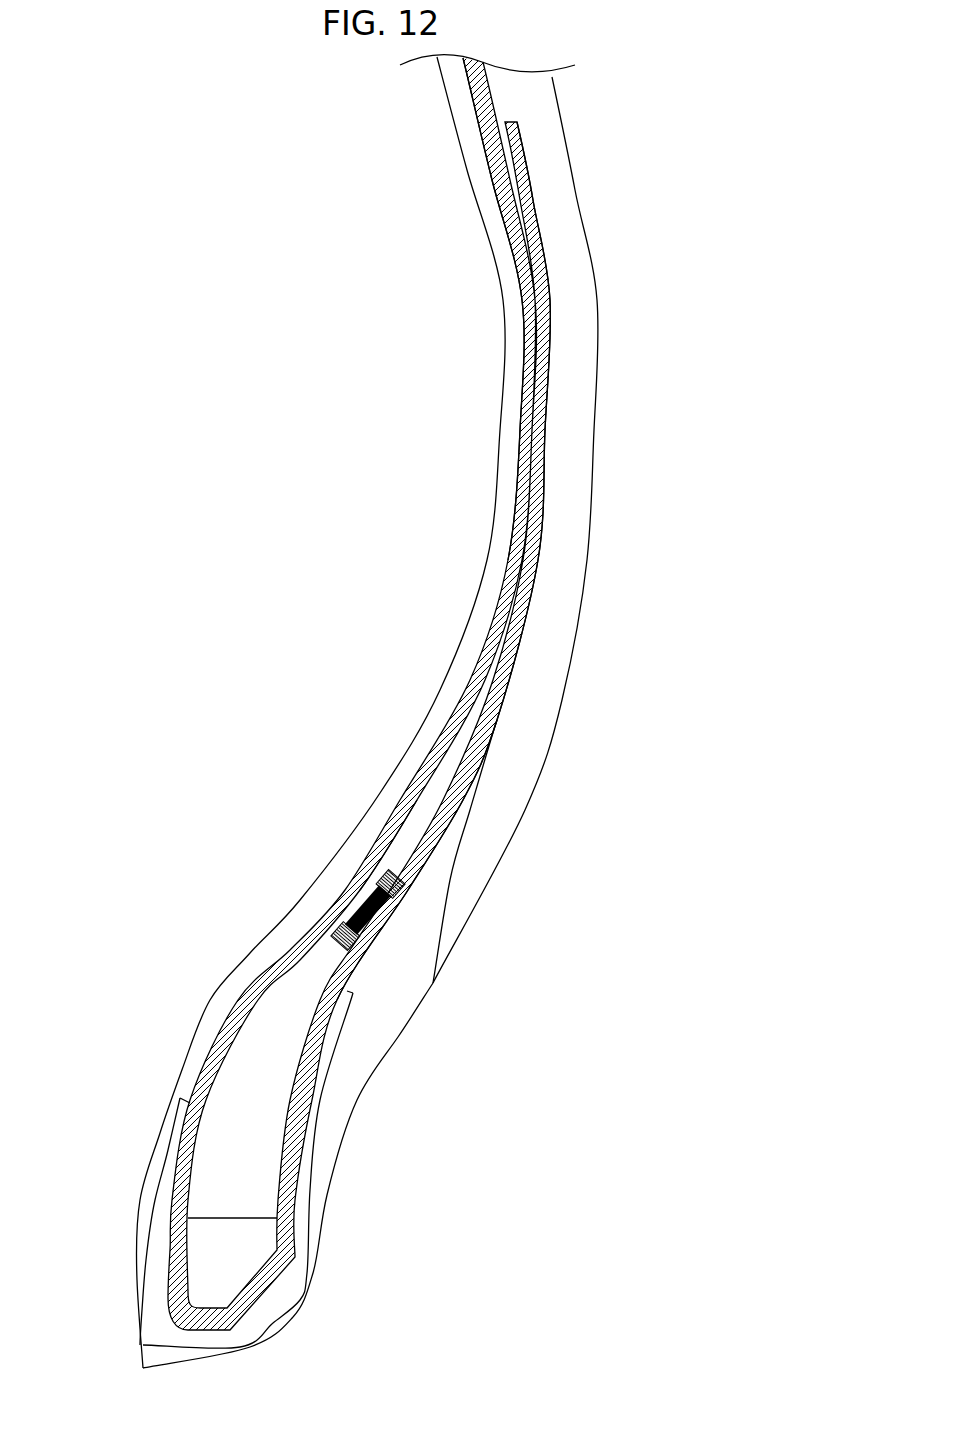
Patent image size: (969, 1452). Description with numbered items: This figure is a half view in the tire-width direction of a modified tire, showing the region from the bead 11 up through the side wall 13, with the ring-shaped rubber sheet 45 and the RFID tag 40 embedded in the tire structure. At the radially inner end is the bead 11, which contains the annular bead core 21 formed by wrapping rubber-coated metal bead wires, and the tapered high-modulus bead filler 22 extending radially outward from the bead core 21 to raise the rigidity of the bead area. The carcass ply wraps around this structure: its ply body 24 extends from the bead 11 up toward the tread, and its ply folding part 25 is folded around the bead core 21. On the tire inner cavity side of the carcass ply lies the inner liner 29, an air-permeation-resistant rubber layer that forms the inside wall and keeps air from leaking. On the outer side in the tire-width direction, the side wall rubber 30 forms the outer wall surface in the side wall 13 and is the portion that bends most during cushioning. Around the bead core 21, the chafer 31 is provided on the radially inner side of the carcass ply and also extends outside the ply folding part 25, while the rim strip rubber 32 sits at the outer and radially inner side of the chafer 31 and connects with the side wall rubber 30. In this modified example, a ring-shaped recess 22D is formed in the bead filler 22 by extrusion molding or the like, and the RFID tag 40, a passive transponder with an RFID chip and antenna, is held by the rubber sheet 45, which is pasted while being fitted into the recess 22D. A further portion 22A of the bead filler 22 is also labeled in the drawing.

The bead 11 is at (470, 1163).
The side wall 13 is at (650, 208).
The bead core 21 is at (213, 1262).
The bead filler 22 is at (247, 1062).
The sheet portion 22A is at (513, 608).
The ring-shaped recess 22D is at (373, 888).
The ply body 24 is at (483, 102).
The ply folding part 25 is at (535, 537).
The inner liner 29 is at (467, 660).
The side wall rubber 30 is at (553, 667).
The chafer 31 is at (155, 1342).
The rim strip rubber 32 is at (377, 1048).
The RFID tag 40 is at (367, 913).
The rubber sheet 45 is at (390, 882).